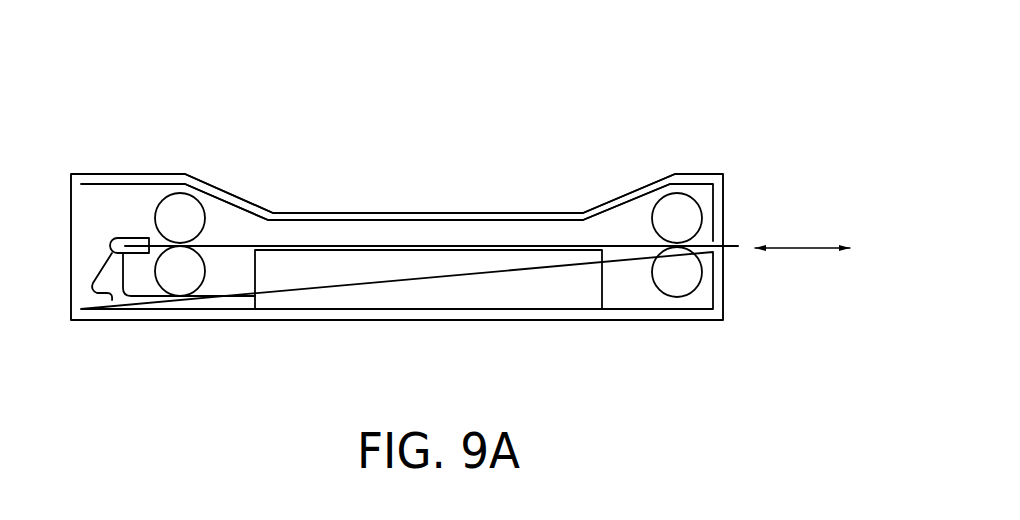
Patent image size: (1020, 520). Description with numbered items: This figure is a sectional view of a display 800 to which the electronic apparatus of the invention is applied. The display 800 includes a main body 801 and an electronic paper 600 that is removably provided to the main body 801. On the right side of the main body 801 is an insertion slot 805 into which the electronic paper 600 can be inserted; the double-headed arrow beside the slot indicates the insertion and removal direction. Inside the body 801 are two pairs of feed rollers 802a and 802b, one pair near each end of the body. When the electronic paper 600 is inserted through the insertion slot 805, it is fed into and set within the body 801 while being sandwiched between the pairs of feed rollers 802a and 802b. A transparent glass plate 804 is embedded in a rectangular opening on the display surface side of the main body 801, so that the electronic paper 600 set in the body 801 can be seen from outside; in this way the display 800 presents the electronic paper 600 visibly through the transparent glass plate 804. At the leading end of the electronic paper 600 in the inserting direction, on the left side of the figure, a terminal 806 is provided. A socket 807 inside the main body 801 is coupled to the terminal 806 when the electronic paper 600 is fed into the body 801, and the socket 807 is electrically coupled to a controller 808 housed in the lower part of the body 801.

The display 800 is at (716, 114).
The main body 801 is at (143, 177).
The pair of feed rollers 802a is at (199, 194).
The pair of feed rollers 802b is at (680, 194).
The transparent glass plate 804 is at (505, 215).
The insertion slot 805 is at (727, 247).
The terminal 806 is at (130, 243).
The socket 807 is at (112, 295).
The controller 808 is at (397, 297).
The electronic paper 600 is at (406, 244).